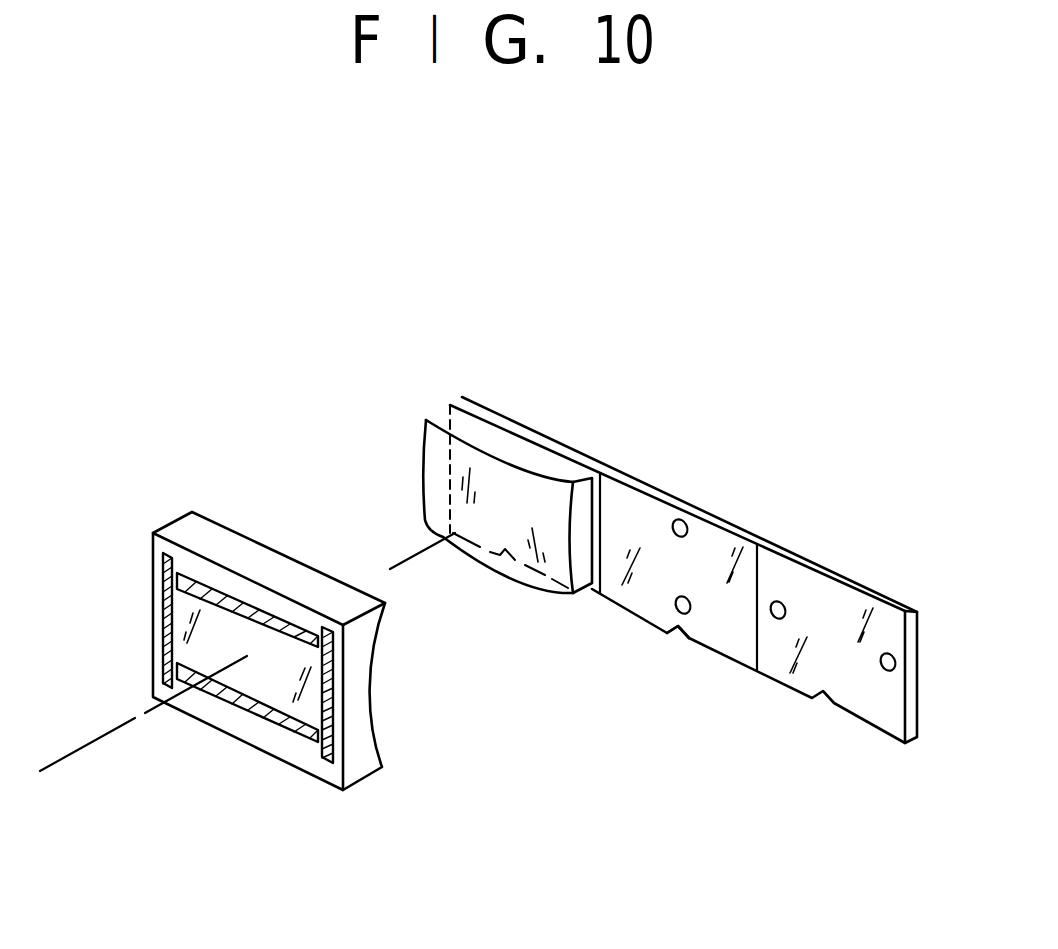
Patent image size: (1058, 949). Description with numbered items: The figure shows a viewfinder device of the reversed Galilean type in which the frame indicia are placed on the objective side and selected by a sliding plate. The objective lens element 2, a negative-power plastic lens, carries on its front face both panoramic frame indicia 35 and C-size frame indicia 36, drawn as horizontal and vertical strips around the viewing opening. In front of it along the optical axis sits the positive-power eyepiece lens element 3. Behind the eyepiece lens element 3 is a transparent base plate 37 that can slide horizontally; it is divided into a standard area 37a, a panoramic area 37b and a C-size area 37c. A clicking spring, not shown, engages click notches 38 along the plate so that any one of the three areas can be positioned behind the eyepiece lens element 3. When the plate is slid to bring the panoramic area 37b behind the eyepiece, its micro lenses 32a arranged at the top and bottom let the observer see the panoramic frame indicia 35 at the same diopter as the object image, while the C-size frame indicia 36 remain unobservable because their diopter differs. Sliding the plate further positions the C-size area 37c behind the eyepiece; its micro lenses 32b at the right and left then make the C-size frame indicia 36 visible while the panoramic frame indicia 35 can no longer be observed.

The objective lens element 2 is at (367, 760).
The eyepiece lens element 3 is at (535, 591).
The panoramic frame indicia 35 is at (303, 735).
The C-size frame indicia 36 is at (322, 628).
The transparent base plate 37 is at (683, 567).
The standard area 37a is at (553, 453).
The panoramic area 37b is at (722, 542).
The C-size area 37c is at (807, 573).
The micro lenses 32a is at (686, 519).
The micro lenses 32b is at (880, 662).
The click notches 38 is at (679, 640).